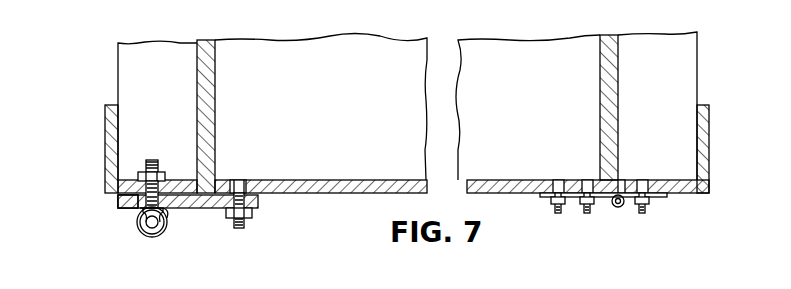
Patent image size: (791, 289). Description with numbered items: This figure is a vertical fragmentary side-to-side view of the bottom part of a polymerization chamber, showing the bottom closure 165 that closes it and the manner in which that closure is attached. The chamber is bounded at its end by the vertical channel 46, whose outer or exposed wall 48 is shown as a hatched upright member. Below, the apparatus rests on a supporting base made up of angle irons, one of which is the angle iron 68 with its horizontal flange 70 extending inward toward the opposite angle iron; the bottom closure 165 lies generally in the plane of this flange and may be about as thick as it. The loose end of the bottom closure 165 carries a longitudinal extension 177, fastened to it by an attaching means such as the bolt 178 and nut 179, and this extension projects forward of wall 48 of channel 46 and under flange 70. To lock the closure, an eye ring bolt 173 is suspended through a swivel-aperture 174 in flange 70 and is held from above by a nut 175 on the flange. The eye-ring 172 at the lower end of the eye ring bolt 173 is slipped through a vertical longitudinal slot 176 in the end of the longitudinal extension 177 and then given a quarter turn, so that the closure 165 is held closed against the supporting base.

The vertical channel 46 is at (148, 77).
The outer wall of channel 48 is at (216, 148).
The angle iron 68 is at (100, 165).
The horizontal flange 70 is at (178, 181).
The bottom closure 165 is at (367, 195).
The eye-ring 172 is at (148, 237).
The eye ring bolt 173 is at (146, 206).
The swivel-aperture 174 is at (136, 198).
The nut 175 is at (140, 178).
The vertical longitudinal slot 176 is at (165, 212).
The longitudinal extension 177 is at (216, 208).
The bolt 178 is at (247, 187).
The nut 179 is at (250, 211).